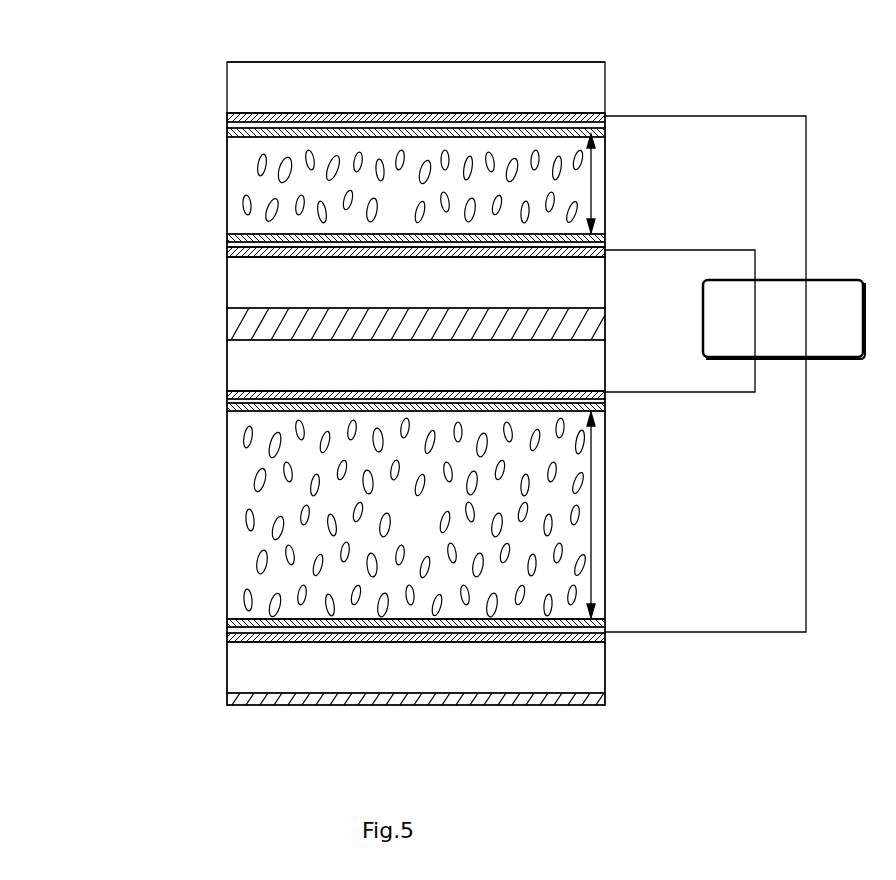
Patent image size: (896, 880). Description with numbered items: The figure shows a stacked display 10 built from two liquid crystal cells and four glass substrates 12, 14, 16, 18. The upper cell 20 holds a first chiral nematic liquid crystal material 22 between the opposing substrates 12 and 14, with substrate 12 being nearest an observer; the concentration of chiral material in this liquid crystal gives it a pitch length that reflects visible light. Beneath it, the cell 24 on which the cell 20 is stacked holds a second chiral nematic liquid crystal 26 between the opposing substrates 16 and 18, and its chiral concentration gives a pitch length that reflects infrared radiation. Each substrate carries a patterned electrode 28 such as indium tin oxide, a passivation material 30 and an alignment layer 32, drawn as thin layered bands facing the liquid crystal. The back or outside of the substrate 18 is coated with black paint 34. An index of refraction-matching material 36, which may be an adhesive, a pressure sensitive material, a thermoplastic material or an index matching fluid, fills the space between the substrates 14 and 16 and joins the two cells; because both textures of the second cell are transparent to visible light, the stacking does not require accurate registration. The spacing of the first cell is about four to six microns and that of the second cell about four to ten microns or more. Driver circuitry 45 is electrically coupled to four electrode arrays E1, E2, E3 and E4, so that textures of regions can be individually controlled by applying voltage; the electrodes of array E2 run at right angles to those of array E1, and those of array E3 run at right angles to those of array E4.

The display 10 is at (194, 550).
The glass substrate 12 is at (458, 82).
The glass substrate 14 is at (402, 295).
The glass substrate 16 is at (402, 377).
The glass substrate 18 is at (262, 673).
The cell 20 is at (212, 160).
The first chiral nematic liquid crystal material 22 is at (410, 194).
The cell 24 is at (636, 490).
The second chiral nematic liquid crystal 26 is at (424, 532).
The patterned electrode 28 is at (250, 116).
The passivation material 30 is at (232, 127).
The alignment layer 32 is at (285, 128).
The black paint 34 is at (573, 700).
The index of refraction-matching material 36 is at (597, 321).
The driver circuitry 45 is at (818, 308).
The electrode array E1 is at (329, 116).
The electrode array E2 is at (283, 250).
The electrode array E3 is at (447, 393).
The electrode array E4 is at (518, 628).